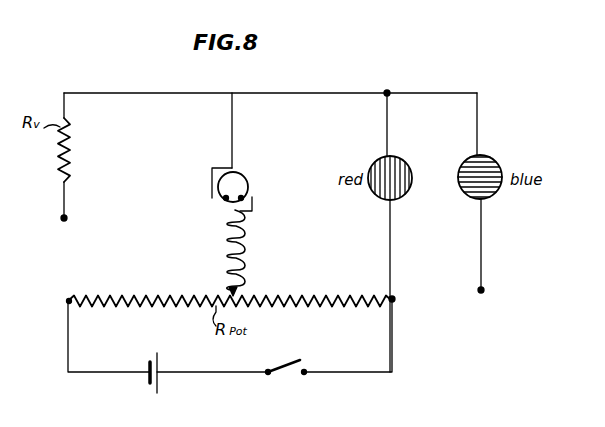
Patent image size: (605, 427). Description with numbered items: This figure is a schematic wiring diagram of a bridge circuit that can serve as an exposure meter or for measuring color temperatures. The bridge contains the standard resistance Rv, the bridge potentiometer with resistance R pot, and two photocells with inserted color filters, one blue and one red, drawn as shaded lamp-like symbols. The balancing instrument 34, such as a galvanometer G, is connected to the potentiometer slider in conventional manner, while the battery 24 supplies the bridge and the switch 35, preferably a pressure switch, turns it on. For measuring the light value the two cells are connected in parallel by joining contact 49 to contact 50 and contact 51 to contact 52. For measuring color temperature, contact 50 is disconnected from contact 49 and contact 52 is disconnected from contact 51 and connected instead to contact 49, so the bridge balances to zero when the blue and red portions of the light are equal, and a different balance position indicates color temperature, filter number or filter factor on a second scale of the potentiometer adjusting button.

The battery 24 is at (150, 388).
The balancing instrument 34 is at (248, 186).
The switch 35 is at (294, 376).
The contact 49 is at (67, 302).
The contact 50 is at (61, 219).
The contact 51 is at (395, 301).
The contact 52 is at (484, 292).